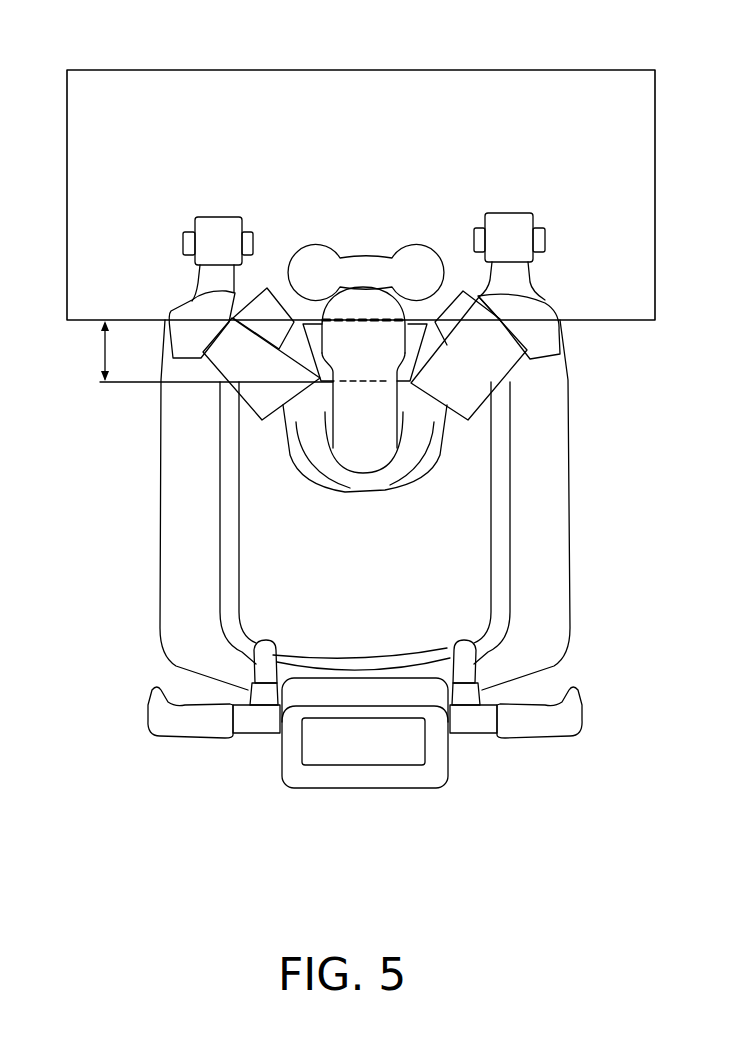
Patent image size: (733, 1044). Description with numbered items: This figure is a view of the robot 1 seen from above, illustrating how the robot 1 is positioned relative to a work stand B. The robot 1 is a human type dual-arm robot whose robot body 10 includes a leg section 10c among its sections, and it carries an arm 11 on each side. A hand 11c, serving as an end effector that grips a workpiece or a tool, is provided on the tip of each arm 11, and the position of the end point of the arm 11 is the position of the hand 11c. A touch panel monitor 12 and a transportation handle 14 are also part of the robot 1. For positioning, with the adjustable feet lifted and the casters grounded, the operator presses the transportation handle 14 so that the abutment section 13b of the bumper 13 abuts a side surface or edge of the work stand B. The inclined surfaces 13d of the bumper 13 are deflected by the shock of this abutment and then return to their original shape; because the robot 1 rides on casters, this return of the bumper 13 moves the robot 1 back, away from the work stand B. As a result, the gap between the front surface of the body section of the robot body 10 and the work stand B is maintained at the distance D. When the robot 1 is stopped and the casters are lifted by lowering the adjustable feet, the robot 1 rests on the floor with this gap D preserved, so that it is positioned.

The work stand B is at (578, 86).
The robot 1 is at (150, 830).
The robot body 10 is at (353, 407).
The leg section 10c is at (258, 557).
The arm 11 is at (174, 298).
The hand 11c is at (203, 248).
The touch panel monitor 12 is at (375, 742).
The bumper 13 is at (60, 392).
The abutment section 13b is at (372, 325).
The inclined surfaces 13d is at (420, 330).
The transportation handle 14 is at (536, 722).
The gap D is at (202, 351).